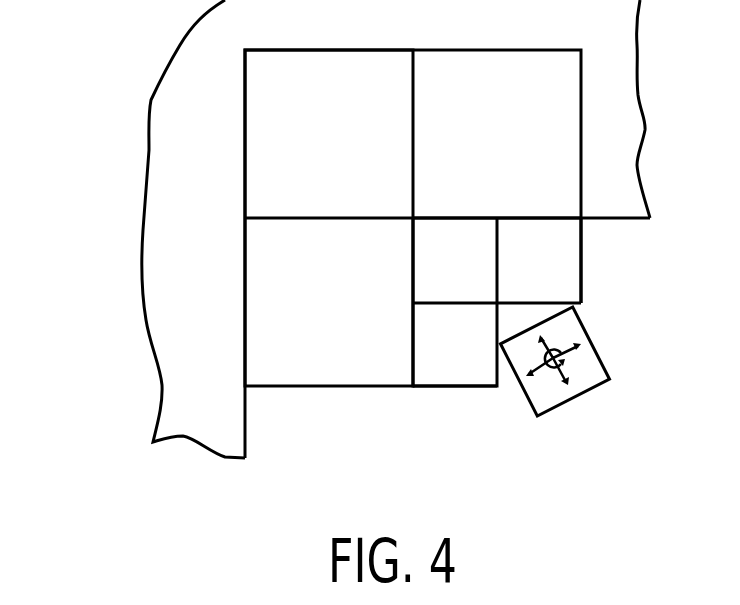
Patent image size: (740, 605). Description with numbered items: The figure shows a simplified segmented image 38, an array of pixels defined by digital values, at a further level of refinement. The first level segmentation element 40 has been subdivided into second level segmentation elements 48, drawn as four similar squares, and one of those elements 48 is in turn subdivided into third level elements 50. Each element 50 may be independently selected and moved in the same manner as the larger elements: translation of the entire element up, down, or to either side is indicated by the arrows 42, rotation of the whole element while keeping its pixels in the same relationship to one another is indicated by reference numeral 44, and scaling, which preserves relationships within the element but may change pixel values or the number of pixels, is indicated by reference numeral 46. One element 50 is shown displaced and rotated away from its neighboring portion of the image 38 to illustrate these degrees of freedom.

The image 38 is at (183, 352).
The first level element 40 is at (118, 233).
The translation arrows 42 is at (556, 383).
The rotation 44 is at (523, 398).
The scaling 46 is at (569, 309).
The second level segmentation element 48 is at (344, 148).
The third level element 50 is at (471, 278).